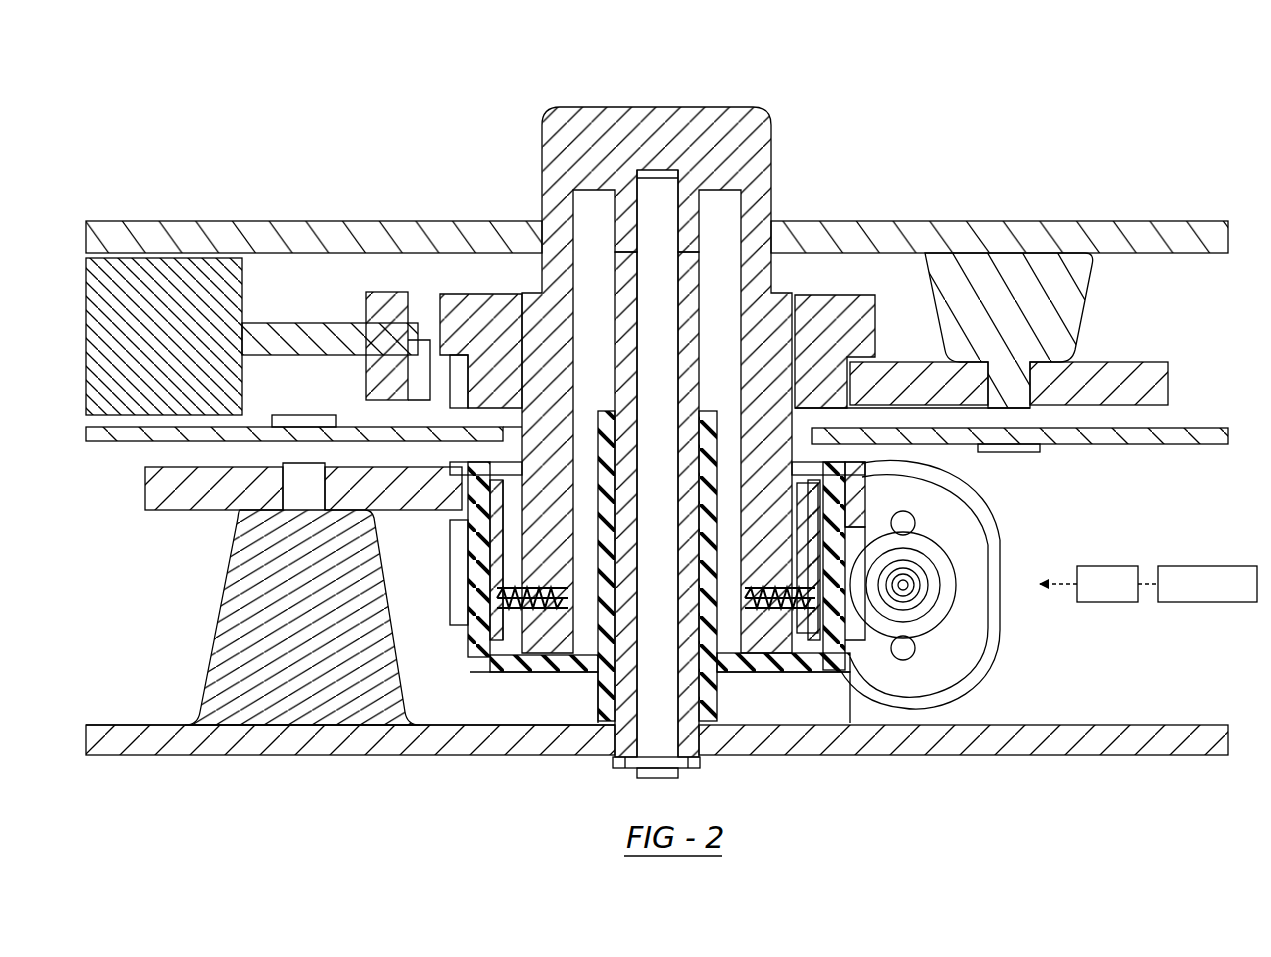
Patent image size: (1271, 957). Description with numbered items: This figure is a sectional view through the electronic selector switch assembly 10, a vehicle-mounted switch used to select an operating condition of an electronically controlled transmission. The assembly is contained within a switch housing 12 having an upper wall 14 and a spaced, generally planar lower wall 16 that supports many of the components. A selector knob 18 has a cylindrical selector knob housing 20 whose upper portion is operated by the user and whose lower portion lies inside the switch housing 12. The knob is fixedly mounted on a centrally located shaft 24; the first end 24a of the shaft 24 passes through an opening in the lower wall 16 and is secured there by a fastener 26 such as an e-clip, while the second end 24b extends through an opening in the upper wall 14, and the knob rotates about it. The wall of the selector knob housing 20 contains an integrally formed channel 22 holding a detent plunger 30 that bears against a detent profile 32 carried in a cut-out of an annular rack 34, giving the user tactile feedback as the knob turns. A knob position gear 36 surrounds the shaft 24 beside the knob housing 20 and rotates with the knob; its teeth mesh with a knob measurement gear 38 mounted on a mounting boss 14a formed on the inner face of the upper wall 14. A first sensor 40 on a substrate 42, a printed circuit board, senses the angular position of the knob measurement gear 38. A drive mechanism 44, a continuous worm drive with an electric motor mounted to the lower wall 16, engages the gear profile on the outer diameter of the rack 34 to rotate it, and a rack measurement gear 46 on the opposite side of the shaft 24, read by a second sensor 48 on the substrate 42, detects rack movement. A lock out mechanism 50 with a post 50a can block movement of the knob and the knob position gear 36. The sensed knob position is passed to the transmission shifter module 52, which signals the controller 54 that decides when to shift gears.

The electronic selector switch assembly 10 is at (928, 93).
The switch housing 12 is at (912, 760).
The upper wall 14 is at (257, 221).
The mounting boss 14a is at (1067, 283).
The lower wall 16 is at (525, 742).
The selector knob 18 is at (600, 104).
The selector knob housing 20 is at (745, 155).
The channel 22 is at (545, 588).
The shaft 24 is at (660, 192).
The first end of shaft 24a is at (645, 178).
The second end of shaft 24b is at (648, 772).
The fastener 26 is at (690, 770).
The detent plunger 30 is at (485, 577).
The detent profile 32 is at (505, 618).
The rack 34 is at (485, 658).
The knob position gear 36 is at (835, 318).
The knob measurement gear 38 is at (1125, 373).
The first sensor 40 is at (1015, 455).
The substrate 42 is at (1185, 437).
The drive mechanism 44 is at (985, 680).
The rack measurement gear 46 is at (162, 487).
The second sensor 48 is at (318, 415).
The lock out mechanism 50 is at (86, 305).
The post 50a is at (405, 322).
The solenoid or motor 52 is at (1100, 566).
The controller 54 is at (1188, 602).